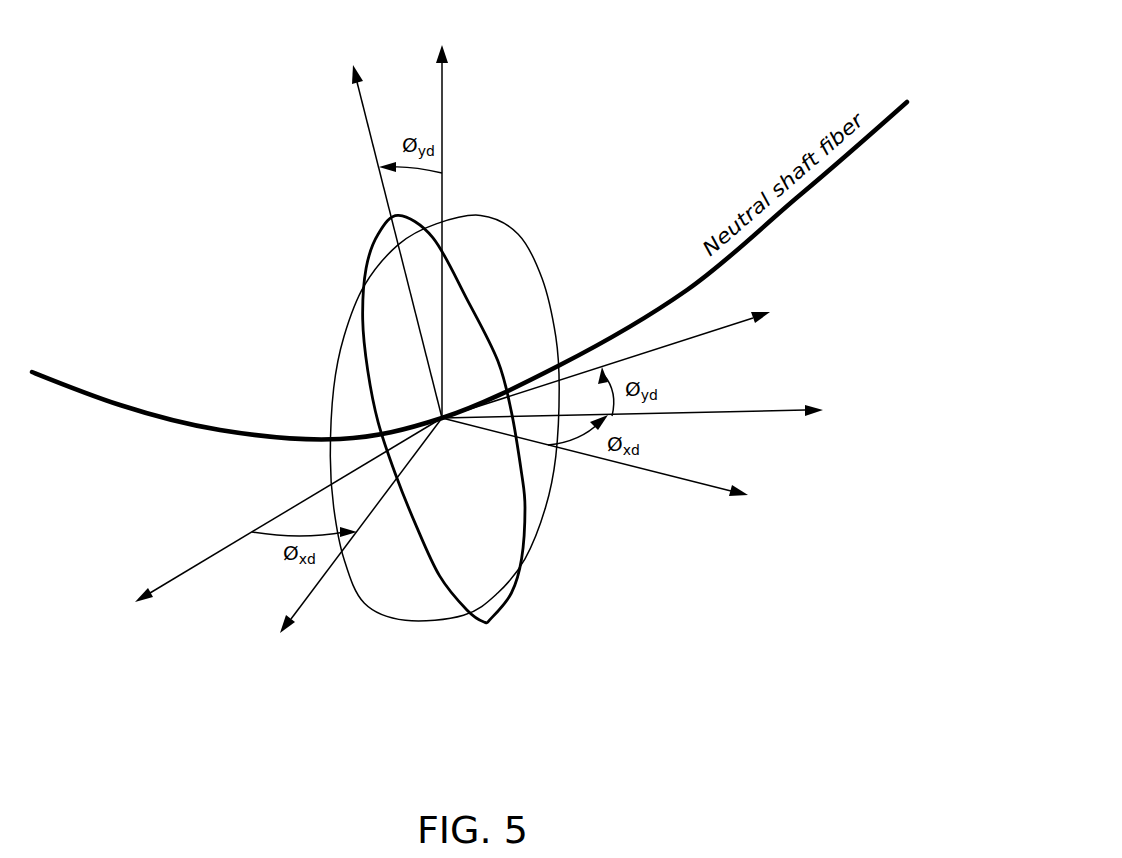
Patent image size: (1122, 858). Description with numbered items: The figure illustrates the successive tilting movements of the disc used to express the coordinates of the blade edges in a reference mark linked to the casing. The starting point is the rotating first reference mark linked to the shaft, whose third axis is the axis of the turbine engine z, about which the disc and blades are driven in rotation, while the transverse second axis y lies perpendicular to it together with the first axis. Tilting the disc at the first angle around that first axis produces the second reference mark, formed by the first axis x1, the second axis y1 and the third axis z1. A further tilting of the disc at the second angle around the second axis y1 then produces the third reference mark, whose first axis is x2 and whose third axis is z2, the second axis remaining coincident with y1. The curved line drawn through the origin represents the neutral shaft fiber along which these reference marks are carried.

The first axis of the second reference mark x1 is at (469, 218).
The first axis of the third reference mark x2 is at (394, 228).
The second axis of the first reference mark y is at (288, 522).
The second axis of the second reference mark y1 is at (361, 540).
The third axis of the second reference mark z1 is at (645, 419).
The third axis of the third reference mark z2 is at (615, 364).
The axis of the turbine engine z is at (599, 471).